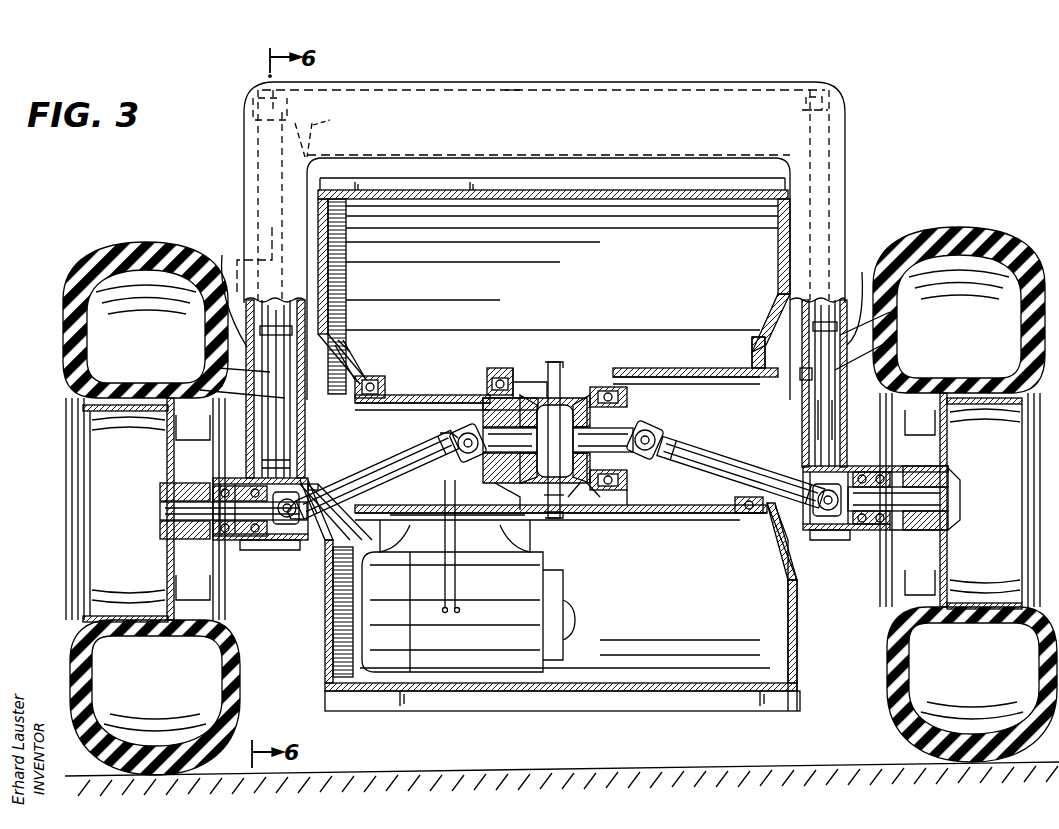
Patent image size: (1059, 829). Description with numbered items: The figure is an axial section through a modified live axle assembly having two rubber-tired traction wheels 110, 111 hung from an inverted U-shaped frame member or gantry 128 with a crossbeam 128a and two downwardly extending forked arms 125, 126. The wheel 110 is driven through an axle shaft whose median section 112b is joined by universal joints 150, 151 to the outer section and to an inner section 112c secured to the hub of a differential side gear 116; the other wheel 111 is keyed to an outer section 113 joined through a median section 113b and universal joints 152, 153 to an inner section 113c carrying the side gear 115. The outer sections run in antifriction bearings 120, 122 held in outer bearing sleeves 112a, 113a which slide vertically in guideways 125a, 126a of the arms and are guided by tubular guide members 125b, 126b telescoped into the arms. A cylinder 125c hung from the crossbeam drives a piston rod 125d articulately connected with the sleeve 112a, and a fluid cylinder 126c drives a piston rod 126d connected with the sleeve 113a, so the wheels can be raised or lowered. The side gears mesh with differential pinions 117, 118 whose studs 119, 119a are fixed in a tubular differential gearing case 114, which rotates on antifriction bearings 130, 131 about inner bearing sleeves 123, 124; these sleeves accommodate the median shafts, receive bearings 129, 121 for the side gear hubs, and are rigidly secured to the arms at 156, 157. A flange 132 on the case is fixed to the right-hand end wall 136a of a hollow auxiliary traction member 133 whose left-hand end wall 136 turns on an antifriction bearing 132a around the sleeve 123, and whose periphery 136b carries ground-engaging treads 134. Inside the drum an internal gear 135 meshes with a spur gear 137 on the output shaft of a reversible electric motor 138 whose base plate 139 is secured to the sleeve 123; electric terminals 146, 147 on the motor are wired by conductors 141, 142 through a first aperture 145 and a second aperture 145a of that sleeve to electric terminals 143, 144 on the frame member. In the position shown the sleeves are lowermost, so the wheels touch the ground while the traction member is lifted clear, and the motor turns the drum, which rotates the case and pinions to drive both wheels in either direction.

The traction wheel 110 is at (956, 232).
The traction wheel 111 is at (96, 252).
The bearing sleeve 112a is at (845, 540).
The median section 112b is at (760, 463).
The inner section 112c is at (615, 446).
The outer section 113 is at (265, 540).
The bearing sleeve 113a is at (294, 550).
The median section 113b is at (368, 466).
The inner section 113c is at (510, 440).
The differential gearing case 114 is at (522, 368).
The side gear 115 is at (520, 505).
The side gear 116 is at (596, 500).
The differential pinion 117 is at (570, 395).
The differential pinion 118 is at (573, 497).
The stud 119 is at (556, 362).
The stud 119a is at (548, 500).
The antifriction bearing 120 is at (948, 525).
The antifriction bearing 121 is at (630, 500).
The antifriction bearing 122 is at (268, 545).
The bearing sleeve 123 is at (430, 395).
The bearing sleeve 124 is at (726, 513).
The arm 125 is at (842, 130).
The guideway 125a is at (868, 296).
The tubular guide member 125b is at (889, 319).
The cylinder 125c is at (830, 170).
The piston rod 125d is at (887, 349).
The arm 126 is at (244, 175).
The guideway 126a is at (236, 287).
The tubular guide member 126b is at (218, 368).
The fluid cylinder 126c is at (248, 152).
The piston rod 126d is at (200, 390).
The frame member 128 is at (597, 73).
The crossbeam 128a is at (513, 90).
The antifriction bearing 129 is at (484, 396).
The antifriction bearing 130 is at (500, 368).
The antifriction bearing 131 is at (622, 368).
The flange 132 is at (750, 345).
The antifriction bearing 132a is at (395, 375).
The auxiliary traction member 133 is at (806, 650).
The treads 134 is at (516, 711).
The internal gear 135 is at (348, 276).
The end wall 136 is at (325, 630).
The end wall 136a is at (798, 620).
The periphery 136b is at (636, 190).
The spur gear 137 is at (333, 660).
The electric motor 138 is at (560, 583).
The base plate 139 is at (426, 516).
The conductor 141 is at (445, 588).
The conductor 142 is at (458, 594).
The electric terminal 143 is at (310, 125).
The electric terminal 144 is at (337, 122).
The first aperture 145 is at (440, 434).
The second aperture 145a is at (336, 480).
The electric terminal 146 is at (444, 613).
The electric terminal 147 is at (460, 613).
The universal joint 150 is at (828, 515).
The universal joint 151 is at (660, 440).
The universal joint 152 is at (300, 498).
The universal joint 153 is at (465, 454).
The rigid connection 156 is at (348, 362).
The rigid connection 157 is at (812, 376).